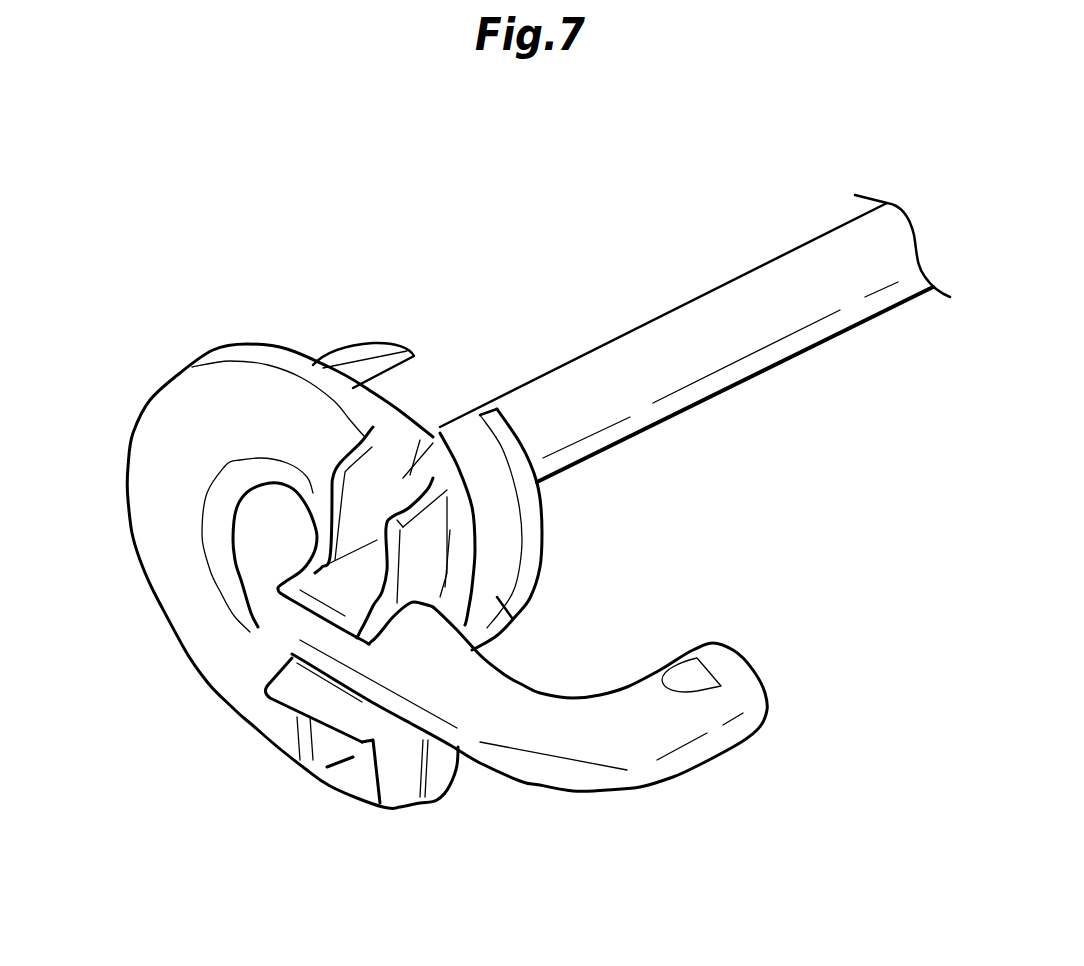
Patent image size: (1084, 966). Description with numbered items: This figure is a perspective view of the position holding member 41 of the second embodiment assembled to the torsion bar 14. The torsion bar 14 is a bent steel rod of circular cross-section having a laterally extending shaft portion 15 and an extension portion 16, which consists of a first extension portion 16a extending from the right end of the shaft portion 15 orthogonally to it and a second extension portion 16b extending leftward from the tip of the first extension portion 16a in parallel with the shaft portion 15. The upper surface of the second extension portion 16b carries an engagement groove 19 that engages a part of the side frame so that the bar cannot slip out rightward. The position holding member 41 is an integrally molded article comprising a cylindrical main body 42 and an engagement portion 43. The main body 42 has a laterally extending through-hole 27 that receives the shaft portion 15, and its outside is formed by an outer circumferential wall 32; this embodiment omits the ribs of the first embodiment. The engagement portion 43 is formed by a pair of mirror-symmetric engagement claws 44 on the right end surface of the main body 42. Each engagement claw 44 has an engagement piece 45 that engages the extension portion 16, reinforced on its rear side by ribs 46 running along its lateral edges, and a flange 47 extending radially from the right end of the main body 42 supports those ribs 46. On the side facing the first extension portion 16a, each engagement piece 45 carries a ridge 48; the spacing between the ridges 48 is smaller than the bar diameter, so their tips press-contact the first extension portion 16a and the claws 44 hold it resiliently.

The torsion bar 14 is at (752, 262).
The shaft portion 15 is at (667, 330).
The extension portion 16 is at (683, 890).
The first extension portion 16a is at (493, 723).
The second extension portion 16b is at (693, 720).
The engagement groove 19 is at (697, 662).
The through-hole 27 is at (253, 493).
The outer circumferential wall 32 is at (500, 600).
The position holding member 41 is at (136, 387).
The main body 42 is at (550, 547).
The engagement portion 43 is at (267, 790).
The engagement claw 44 is at (290, 598).
The engagement piece 45 is at (343, 613).
The rib 46 is at (300, 580).
The flange 47 is at (198, 373).
The ridge 48 is at (350, 712).